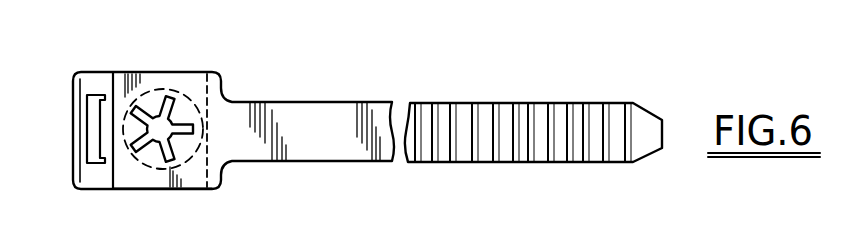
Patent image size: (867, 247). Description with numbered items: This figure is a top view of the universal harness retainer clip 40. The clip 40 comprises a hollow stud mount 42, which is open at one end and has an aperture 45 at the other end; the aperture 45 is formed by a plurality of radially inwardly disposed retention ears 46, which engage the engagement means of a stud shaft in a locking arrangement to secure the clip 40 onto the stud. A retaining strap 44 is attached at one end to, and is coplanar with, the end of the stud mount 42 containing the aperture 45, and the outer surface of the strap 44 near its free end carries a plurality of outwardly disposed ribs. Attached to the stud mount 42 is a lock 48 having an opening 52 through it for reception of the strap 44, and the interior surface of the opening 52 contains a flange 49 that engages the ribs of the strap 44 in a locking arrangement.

The retainer clip 40 is at (318, 93).
The hollow stud mount 42 is at (151, 191).
The retaining strap 44 is at (381, 102).
The aperture 45 is at (148, 116).
The retention ears 46 is at (185, 150).
The lock 48 is at (72, 172).
The flange 49 is at (98, 141).
The opening 52 is at (95, 91).